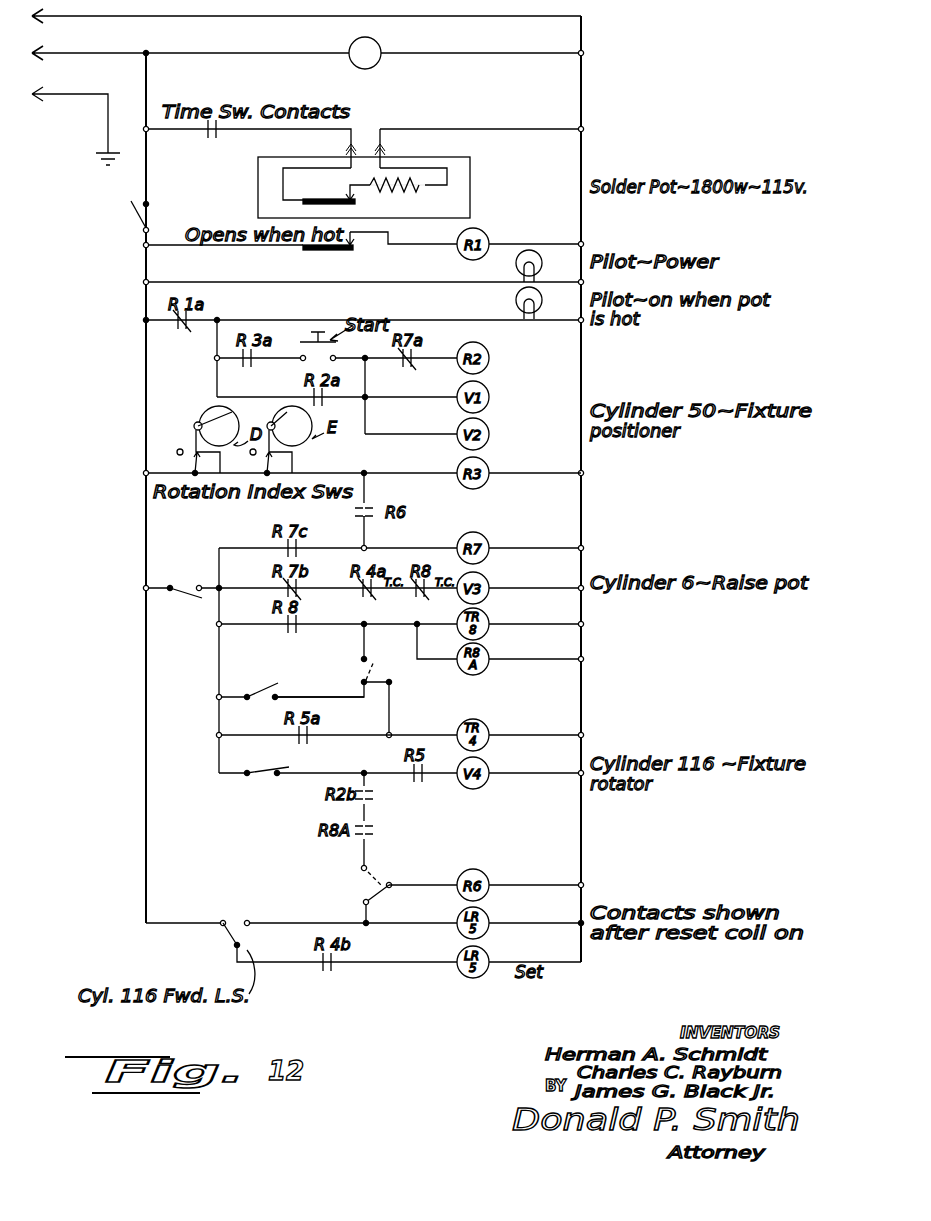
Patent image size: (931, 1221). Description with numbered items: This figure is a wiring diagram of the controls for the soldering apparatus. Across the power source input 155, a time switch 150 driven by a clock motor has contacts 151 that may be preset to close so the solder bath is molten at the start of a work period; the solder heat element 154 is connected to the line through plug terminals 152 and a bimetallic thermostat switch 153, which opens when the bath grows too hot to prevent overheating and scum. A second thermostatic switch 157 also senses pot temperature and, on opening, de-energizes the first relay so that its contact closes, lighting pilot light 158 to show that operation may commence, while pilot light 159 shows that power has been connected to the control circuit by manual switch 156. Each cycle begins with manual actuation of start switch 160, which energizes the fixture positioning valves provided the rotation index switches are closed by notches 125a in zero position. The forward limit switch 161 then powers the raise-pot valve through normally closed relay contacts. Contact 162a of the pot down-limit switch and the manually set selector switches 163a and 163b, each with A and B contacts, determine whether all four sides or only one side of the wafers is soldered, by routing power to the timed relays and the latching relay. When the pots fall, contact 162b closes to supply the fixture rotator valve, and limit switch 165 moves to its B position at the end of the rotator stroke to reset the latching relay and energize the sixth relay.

The power source input 155 is at (50, 18).
The time switch 150 is at (350, 61).
The time switch contacts 151 is at (218, 134).
The plug terminals 152 is at (366, 138).
The bimetallic thermostat switch 153 is at (355, 203).
The solder heat element 154 is at (395, 188).
The switch 156 is at (136, 202).
The thermostatic switch 157 is at (353, 249).
The pilot light 159 is at (516, 268).
The pilot light 158 is at (516, 305).
The start switch 160 is at (337, 358).
The notches 125a is at (232, 412).
The forward limit switch 161 is at (196, 572).
The down limit switch contact 162a is at (282, 685).
The switch 163a is at (380, 678).
The down limit switch contact 162b is at (272, 776).
The switch 163b is at (381, 880).
The limit switch 165 is at (226, 934).